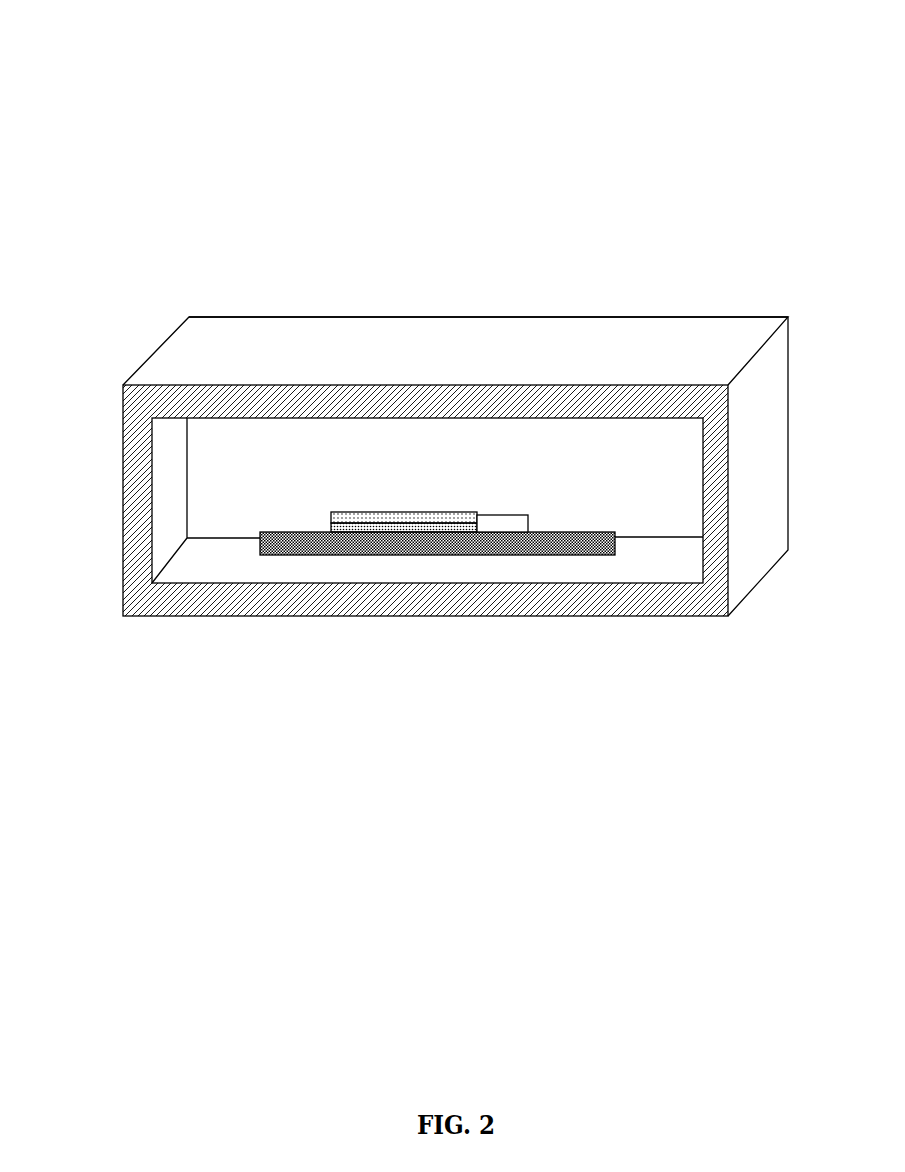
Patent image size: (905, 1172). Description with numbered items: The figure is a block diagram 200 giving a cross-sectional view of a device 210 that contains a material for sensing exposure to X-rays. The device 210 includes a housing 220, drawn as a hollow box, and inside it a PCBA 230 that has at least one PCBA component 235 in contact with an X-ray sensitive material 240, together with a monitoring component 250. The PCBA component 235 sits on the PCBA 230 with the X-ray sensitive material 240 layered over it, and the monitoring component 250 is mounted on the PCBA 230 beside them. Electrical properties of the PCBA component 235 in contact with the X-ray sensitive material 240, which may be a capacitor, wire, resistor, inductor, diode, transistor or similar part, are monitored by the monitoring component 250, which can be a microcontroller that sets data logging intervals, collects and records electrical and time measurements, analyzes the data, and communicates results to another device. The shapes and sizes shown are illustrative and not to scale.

The block diagram 200 is at (249, 66).
The device 210 is at (137, 252).
The housing 220 is at (693, 337).
The PCBA 230 is at (590, 532).
The PCBA component 235 is at (328, 532).
The X-ray sensitive material 240 is at (331, 512).
The monitoring component 250 is at (503, 515).